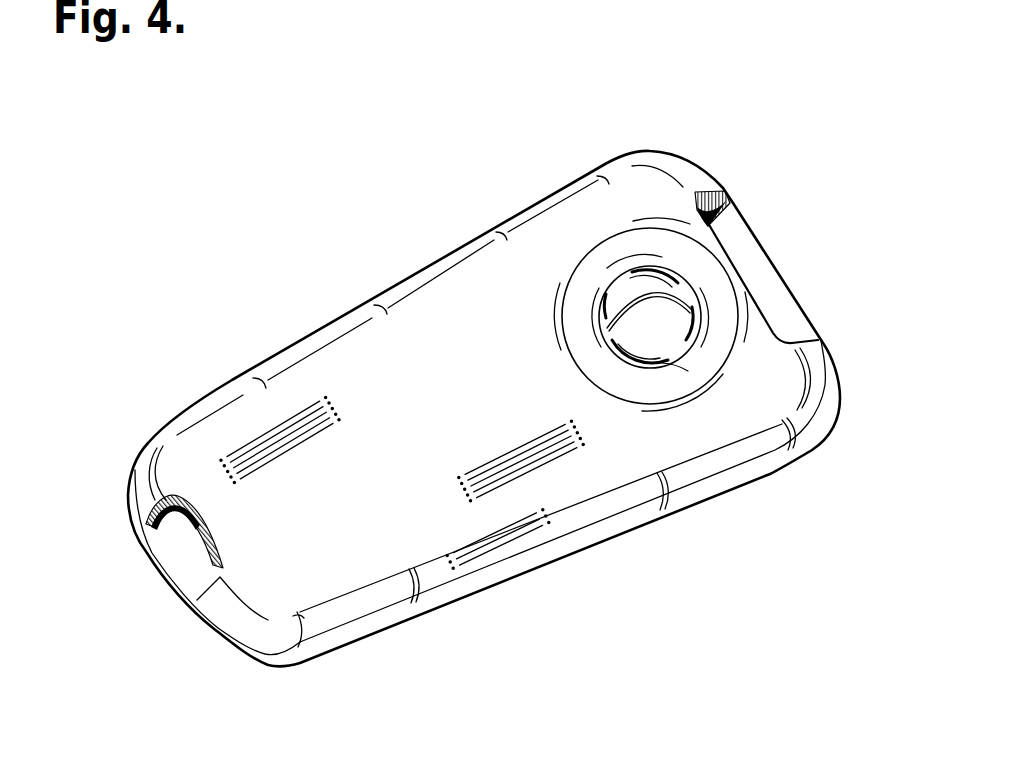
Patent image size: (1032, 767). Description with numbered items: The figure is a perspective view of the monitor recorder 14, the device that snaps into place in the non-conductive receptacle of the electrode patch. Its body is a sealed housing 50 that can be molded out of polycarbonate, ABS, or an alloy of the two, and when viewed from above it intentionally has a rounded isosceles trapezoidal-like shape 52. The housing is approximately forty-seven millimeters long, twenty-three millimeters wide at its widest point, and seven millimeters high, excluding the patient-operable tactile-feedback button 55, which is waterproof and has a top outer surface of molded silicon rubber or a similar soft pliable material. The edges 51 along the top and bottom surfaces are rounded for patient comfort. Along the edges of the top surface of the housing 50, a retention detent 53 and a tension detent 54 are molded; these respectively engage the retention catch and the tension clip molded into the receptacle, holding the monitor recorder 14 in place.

The monitor recorder 14 is at (290, 228).
The sealed housing 50 is at (620, 527).
The edges 51 is at (826, 447).
The rounded isosceles trapezoidal-like shape 52 is at (487, 370).
The retention detent 53 is at (747, 247).
The tension detent 54 is at (173, 545).
The patient-operable tactile-feedback button 55 is at (627, 262).